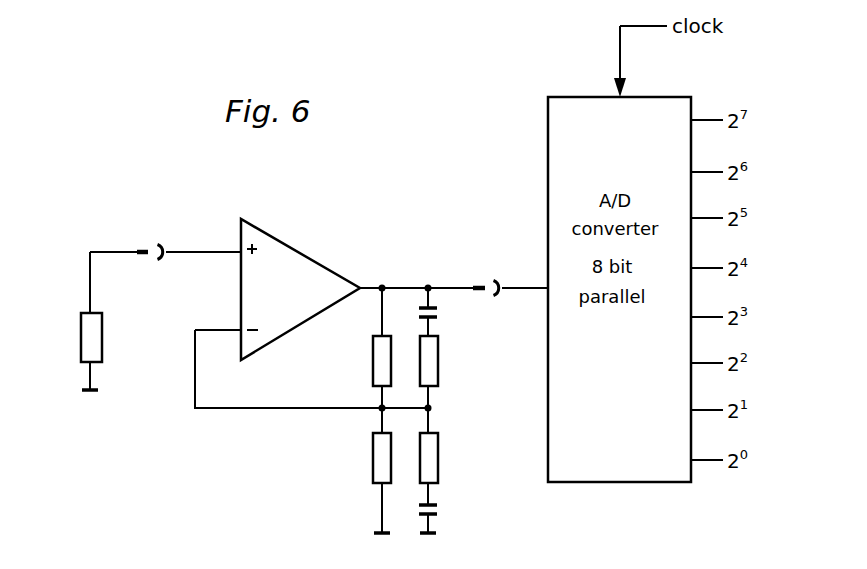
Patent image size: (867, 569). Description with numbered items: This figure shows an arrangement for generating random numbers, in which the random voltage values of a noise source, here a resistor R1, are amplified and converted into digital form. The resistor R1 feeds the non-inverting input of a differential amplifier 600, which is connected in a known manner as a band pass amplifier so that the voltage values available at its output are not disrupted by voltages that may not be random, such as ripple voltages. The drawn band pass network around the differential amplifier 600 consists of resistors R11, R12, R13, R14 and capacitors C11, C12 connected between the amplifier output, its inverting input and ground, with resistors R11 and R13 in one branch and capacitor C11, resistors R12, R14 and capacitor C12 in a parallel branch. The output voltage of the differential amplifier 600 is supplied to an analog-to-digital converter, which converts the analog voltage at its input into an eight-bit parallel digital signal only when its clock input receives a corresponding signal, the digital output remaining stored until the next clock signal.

The differential amplifier 600 is at (291, 267).
The resistor R1 is at (90, 343).
The resistor R11 is at (384, 362).
The resistor R12 is at (434, 368).
The resistor R13 is at (381, 456).
The resistor R14 is at (434, 456).
The capacitor C11 is at (438, 313).
The capacitor C12 is at (438, 513).